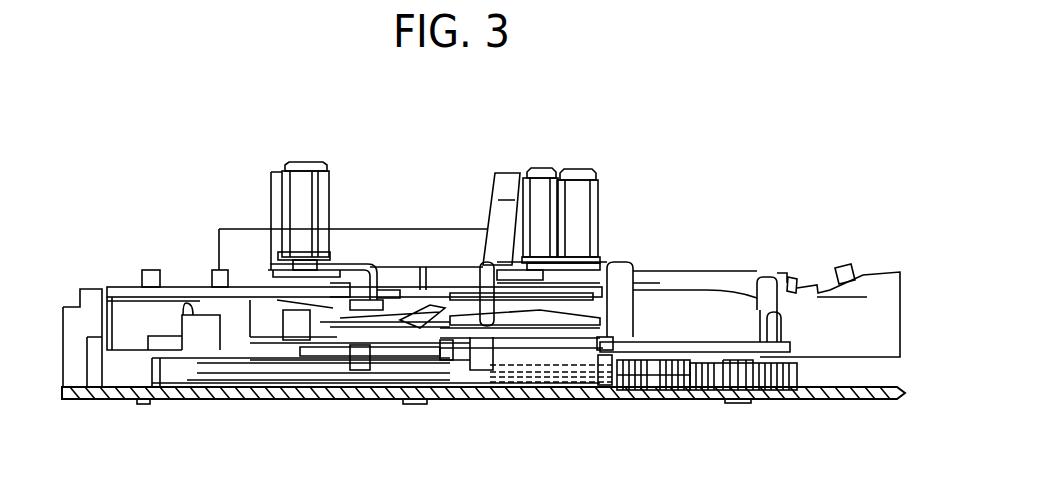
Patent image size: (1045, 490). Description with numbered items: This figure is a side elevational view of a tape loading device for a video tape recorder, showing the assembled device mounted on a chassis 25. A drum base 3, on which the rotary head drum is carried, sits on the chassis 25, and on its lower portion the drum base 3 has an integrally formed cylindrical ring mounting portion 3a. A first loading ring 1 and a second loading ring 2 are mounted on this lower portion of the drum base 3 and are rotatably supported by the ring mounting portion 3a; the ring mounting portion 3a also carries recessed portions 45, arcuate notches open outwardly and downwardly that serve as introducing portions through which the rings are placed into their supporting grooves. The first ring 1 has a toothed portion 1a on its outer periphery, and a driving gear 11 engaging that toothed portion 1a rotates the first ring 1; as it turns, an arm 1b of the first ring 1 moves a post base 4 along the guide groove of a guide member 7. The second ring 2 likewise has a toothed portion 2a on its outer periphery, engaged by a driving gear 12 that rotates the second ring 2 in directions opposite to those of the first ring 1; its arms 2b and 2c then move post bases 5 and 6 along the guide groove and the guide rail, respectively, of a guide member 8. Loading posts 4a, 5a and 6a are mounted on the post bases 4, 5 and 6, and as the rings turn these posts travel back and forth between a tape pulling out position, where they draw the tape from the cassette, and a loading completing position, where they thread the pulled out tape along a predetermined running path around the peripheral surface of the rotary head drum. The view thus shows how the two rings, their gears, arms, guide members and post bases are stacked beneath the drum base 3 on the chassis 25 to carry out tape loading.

The first loading ring 1 is at (245, 397).
The toothed portion 1a is at (547, 397).
The arm 1b is at (420, 290).
The second loading ring 2 is at (268, 397).
The toothed portion 2a is at (597, 397).
The arm 2b is at (490, 390).
The arm 2c is at (418, 392).
The drum base 3 is at (723, 295).
The cylindrical ring mounting portion 3a is at (323, 393).
The post base 4 is at (336, 280).
The loading post 4a is at (298, 197).
The post base 5 is at (503, 283).
The loading post 5a is at (533, 203).
The post base 6 is at (603, 280).
The loading post 6a is at (590, 200).
The guide member 7 is at (183, 287).
The guide member 8 is at (662, 302).
The driving gear 11 is at (635, 395).
The driving gear 12 is at (681, 395).
The chassis 25 is at (167, 398).
The recessed portion 45 is at (413, 397).